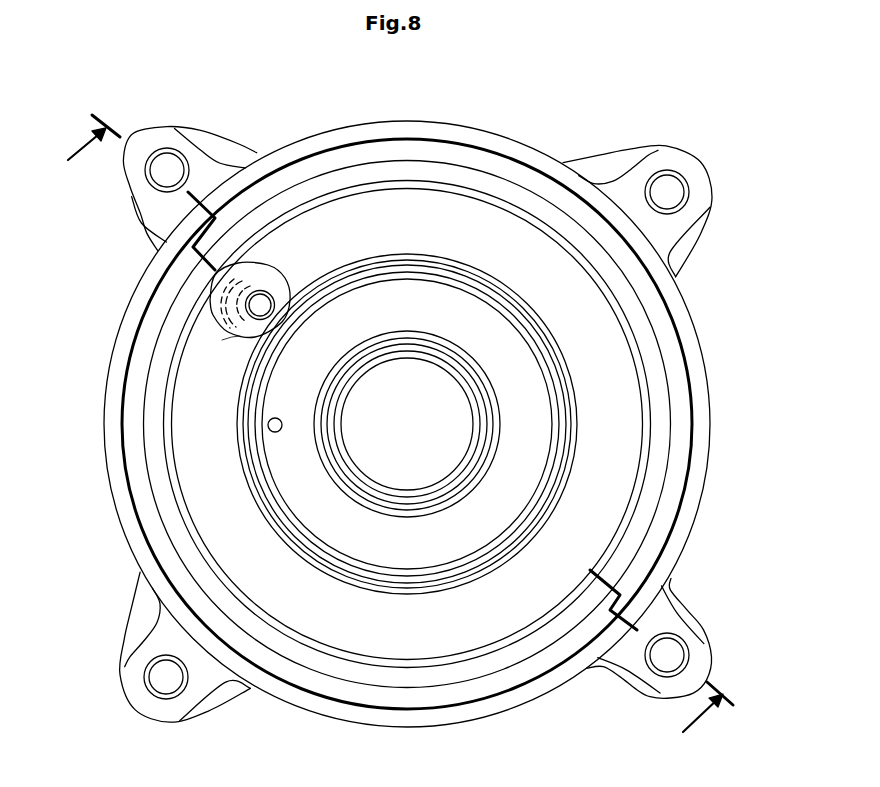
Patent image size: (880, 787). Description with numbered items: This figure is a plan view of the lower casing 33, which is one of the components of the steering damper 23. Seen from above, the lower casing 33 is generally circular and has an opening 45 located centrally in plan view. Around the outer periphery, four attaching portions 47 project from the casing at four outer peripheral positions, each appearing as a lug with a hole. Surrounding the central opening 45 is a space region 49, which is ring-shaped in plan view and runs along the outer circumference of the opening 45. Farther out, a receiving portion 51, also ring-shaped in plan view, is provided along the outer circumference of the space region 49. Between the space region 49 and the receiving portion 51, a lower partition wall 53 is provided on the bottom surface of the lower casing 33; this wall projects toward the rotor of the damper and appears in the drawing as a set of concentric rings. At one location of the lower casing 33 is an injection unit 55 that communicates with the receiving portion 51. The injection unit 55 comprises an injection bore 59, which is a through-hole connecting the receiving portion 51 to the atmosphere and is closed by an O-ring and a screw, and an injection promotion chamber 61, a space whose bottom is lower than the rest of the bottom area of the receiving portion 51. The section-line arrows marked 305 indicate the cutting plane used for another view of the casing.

The steering damper 23 is at (579, 97).
The lower casing 33 is at (475, 119).
The opening 45 is at (471, 425).
The attaching portions 47 is at (680, 189).
The space region 49 is at (537, 434).
The receiving portion 51 is at (624, 434).
The lower partition wall 53 is at (410, 582).
The injection unit 55 is at (232, 338).
The injection bore 59 is at (264, 301).
The injection promotion chamber 61 is at (240, 266).
The section line 305 is at (381, 437).